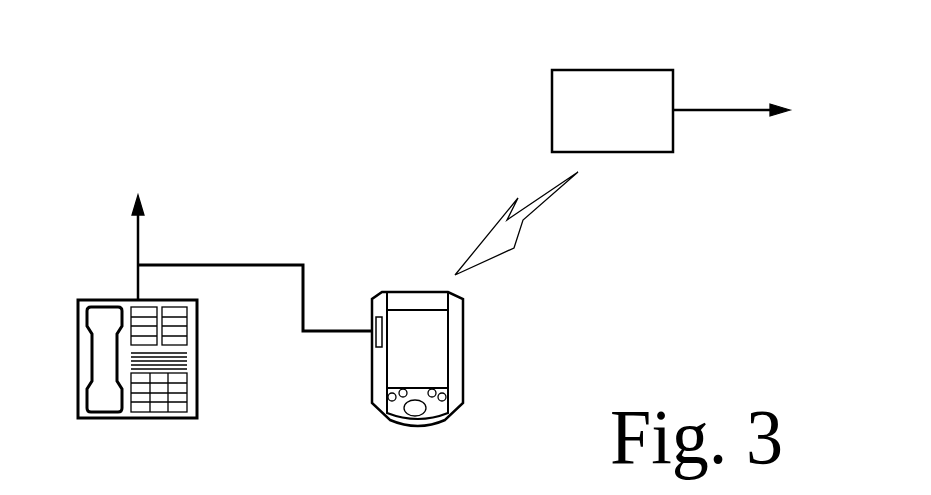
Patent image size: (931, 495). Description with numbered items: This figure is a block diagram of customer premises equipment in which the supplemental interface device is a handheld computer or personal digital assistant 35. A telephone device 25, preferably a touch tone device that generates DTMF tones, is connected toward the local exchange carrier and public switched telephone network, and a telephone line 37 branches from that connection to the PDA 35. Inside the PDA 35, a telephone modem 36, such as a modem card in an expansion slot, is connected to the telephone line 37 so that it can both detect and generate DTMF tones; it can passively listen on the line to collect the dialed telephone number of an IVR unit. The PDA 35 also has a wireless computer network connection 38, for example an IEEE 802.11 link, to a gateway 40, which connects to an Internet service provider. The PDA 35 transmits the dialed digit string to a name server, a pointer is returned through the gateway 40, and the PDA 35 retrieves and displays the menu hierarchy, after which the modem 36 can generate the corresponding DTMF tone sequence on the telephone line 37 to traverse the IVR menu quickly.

The telephone device 25 is at (77, 360).
The personal digital assistant 35 is at (462, 338).
The telephone modem 36 is at (377, 336).
The telephone line 37 is at (270, 265).
The wireless computer network connection 38 is at (502, 218).
The gateway 40 is at (588, 70).